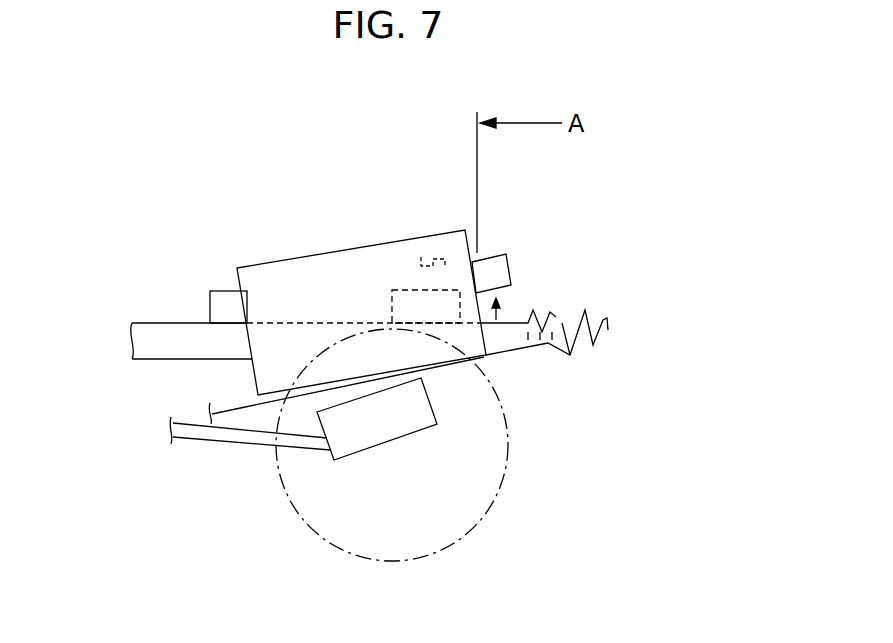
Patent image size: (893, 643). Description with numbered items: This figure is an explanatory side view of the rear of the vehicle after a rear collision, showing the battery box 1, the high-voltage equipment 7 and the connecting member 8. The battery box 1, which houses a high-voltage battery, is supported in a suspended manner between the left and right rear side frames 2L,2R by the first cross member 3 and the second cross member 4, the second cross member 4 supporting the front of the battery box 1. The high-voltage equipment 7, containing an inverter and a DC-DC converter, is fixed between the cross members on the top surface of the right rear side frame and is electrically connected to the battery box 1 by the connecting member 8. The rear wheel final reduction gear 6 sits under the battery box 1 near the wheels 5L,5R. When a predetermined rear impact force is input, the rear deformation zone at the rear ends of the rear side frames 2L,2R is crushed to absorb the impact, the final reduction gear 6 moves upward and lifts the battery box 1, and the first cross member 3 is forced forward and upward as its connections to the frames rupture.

The battery box 1 is at (298, 200).
The left and right rear side frames 2L,2R is at (542, 302).
The first cross member 3 is at (507, 258).
The second cross member 4 is at (208, 310).
The wheels 5L,5R is at (507, 457).
The rear wheel final reduction gear 6 is at (385, 447).
The high-voltage equipment 7 is at (402, 290).
The connecting member 8 is at (425, 257).